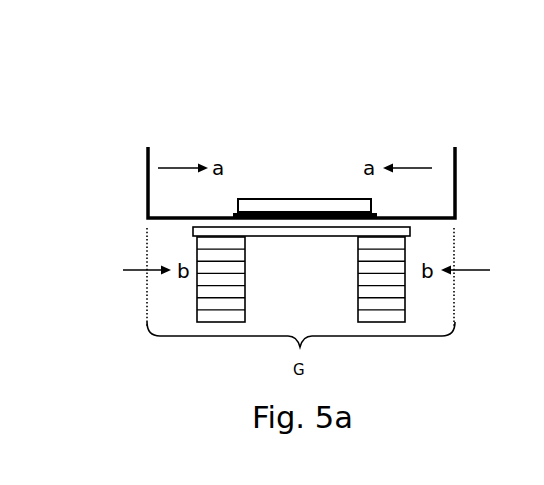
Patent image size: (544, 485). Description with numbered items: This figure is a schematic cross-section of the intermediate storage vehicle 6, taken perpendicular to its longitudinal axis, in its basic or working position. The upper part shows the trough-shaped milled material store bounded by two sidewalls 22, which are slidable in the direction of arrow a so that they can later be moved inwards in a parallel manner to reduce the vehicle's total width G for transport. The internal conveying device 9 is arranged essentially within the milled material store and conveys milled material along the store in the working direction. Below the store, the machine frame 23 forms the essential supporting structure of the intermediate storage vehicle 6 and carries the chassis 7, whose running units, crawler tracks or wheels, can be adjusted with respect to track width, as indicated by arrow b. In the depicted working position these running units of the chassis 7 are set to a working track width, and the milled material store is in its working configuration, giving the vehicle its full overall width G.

The sidewalls 22 is at (148, 193).
The internal conveying device 9 is at (277, 202).
The machine frame 23 is at (205, 230).
The chassis 7 is at (395, 299).
The intermediate storage vehicle 6 is at (312, 132).